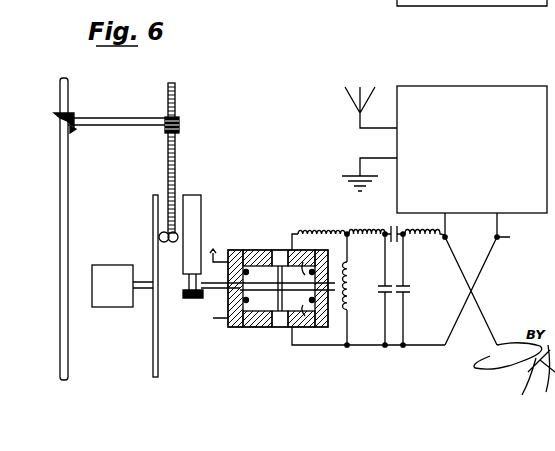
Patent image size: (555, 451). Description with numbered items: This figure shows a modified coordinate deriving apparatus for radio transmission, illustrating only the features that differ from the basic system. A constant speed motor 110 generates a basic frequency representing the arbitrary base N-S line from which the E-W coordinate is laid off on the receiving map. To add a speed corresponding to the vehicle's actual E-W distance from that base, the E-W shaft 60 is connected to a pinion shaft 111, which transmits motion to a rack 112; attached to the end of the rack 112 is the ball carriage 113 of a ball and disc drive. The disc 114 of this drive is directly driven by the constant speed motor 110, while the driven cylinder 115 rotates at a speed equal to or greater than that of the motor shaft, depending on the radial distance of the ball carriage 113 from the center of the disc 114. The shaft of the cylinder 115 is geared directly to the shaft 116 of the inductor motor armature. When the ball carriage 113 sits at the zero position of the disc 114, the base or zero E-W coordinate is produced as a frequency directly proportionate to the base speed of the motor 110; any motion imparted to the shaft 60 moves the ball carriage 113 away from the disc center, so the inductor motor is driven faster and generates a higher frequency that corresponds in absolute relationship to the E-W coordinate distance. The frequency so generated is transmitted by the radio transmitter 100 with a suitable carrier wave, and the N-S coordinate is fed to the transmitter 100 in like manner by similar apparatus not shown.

The E-W shaft 60 is at (60, 245).
The radio transmitter 100 is at (472, 149).
The constant speed motor 110 is at (112, 308).
The pinion shaft 111 is at (105, 115).
The rack 112 is at (178, 98).
The ball carriage 113 is at (167, 249).
The disc 114 is at (153, 225).
The driven cylinder 115 is at (197, 206).
The shaft of the inductor motor armature 116 is at (250, 322).